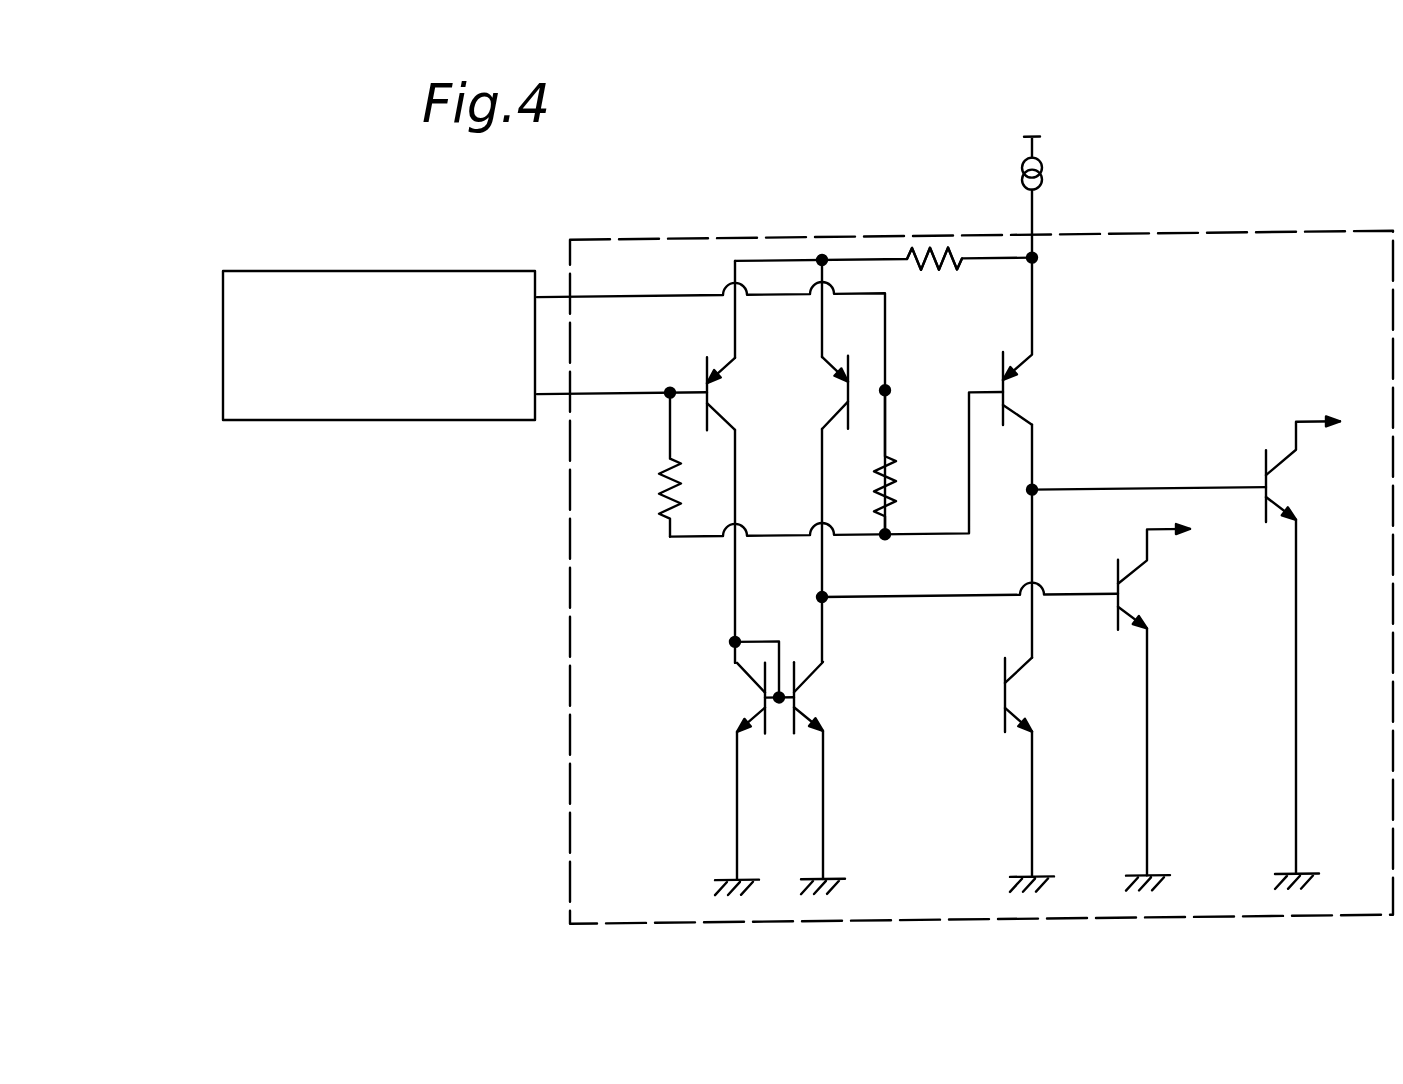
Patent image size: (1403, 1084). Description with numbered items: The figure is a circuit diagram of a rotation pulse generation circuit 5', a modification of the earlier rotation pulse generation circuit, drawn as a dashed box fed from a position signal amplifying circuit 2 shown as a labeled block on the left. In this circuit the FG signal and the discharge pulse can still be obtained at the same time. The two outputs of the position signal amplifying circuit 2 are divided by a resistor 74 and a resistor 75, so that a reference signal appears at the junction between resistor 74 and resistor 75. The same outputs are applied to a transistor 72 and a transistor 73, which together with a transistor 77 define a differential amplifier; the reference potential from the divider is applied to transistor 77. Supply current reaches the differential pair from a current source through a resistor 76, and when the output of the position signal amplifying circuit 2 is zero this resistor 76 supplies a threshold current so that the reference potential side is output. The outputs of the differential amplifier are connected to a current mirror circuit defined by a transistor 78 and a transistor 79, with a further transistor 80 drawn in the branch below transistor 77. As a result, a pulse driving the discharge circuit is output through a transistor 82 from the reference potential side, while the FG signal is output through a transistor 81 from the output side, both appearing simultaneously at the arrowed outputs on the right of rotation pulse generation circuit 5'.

The position signal amplifying circuit 2 is at (415, 270).
The rotation pulse generation circuit 5' is at (981, 548).
The transistor 72 is at (715, 404).
The transistor 73 is at (796, 387).
The resistor 74 is at (657, 478).
The resistor 75 is at (893, 468).
The resistor 76 is at (950, 277).
The transistor 77 is at (1043, 173).
The transistor 78 is at (738, 704).
The transistor 79 is at (808, 704).
The NPN transistor 80 is at (1020, 700).
The transistor 81 is at (1133, 593).
The transistor 82 is at (1282, 486).